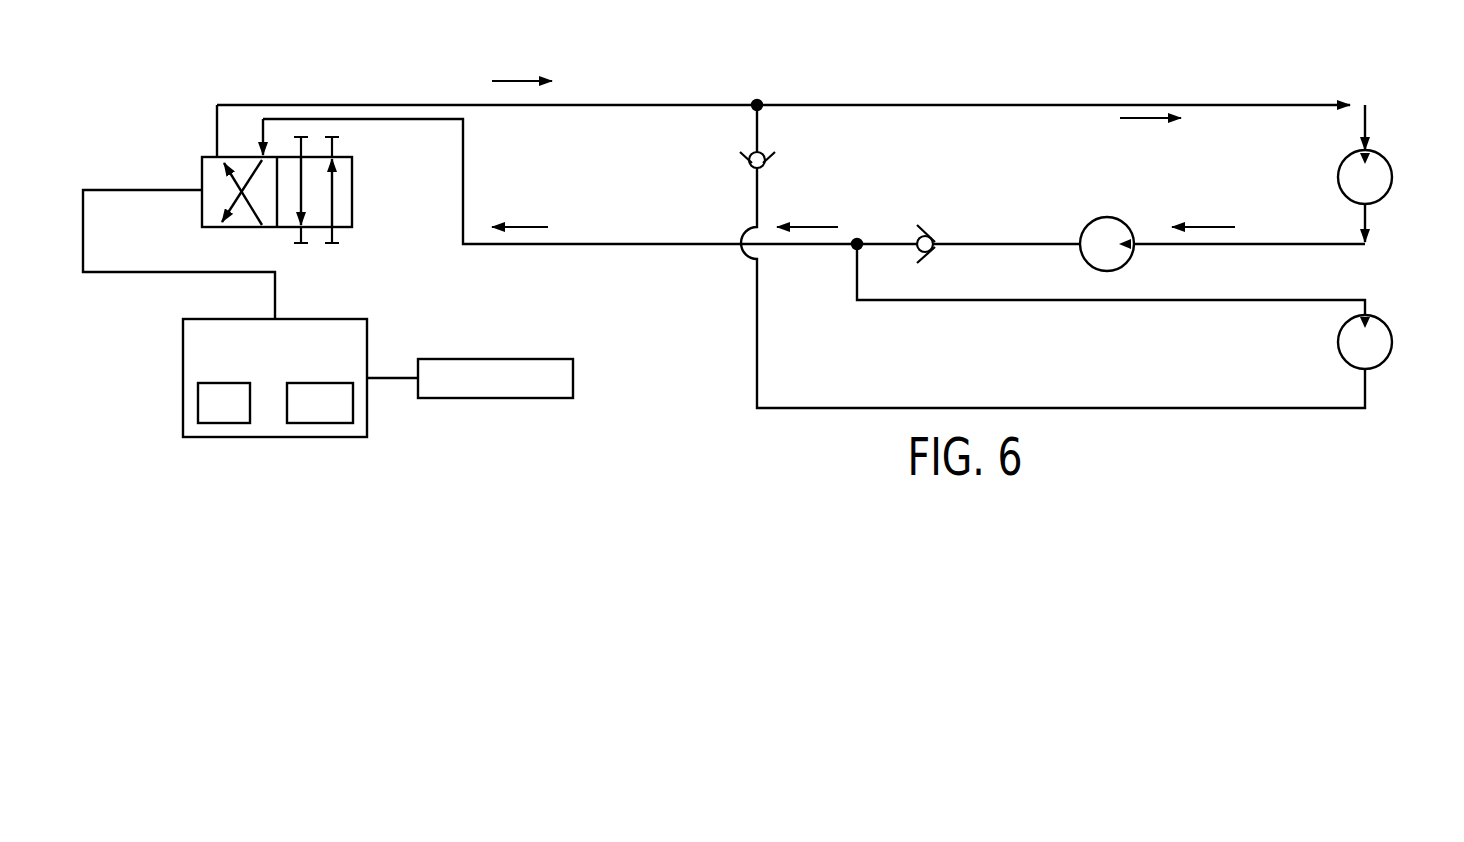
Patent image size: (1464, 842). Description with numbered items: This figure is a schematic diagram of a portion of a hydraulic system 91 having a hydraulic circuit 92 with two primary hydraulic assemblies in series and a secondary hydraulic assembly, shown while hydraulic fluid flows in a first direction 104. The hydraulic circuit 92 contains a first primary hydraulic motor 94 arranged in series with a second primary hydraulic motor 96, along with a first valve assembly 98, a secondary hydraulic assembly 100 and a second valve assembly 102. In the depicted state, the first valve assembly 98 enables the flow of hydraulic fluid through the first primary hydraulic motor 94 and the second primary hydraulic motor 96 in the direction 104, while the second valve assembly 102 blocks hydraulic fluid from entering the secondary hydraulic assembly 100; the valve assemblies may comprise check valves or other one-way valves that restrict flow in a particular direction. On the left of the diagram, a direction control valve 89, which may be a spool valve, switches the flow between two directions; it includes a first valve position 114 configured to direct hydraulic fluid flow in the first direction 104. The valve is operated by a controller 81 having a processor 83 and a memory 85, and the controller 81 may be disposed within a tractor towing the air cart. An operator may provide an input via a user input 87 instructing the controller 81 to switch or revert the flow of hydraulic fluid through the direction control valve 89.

The controller 81 is at (378, 328).
The processor 83 is at (222, 424).
The memory 85 is at (320, 424).
The user input 87 is at (495, 400).
The direction control valve 89 is at (203, 170).
The hydraulic system 91 is at (141, 380).
The hydraulic circuit 92 is at (1370, 273).
The first primary hydraulic motor 94 is at (1385, 160).
The second primary hydraulic motor 96 is at (1110, 218).
The first valve assembly 98 is at (937, 236).
The secondary hydraulic assembly 100 is at (1385, 325).
The second valve assembly 102 is at (750, 168).
The direction 104 is at (518, 80).
The first valve position 114 is at (356, 262).